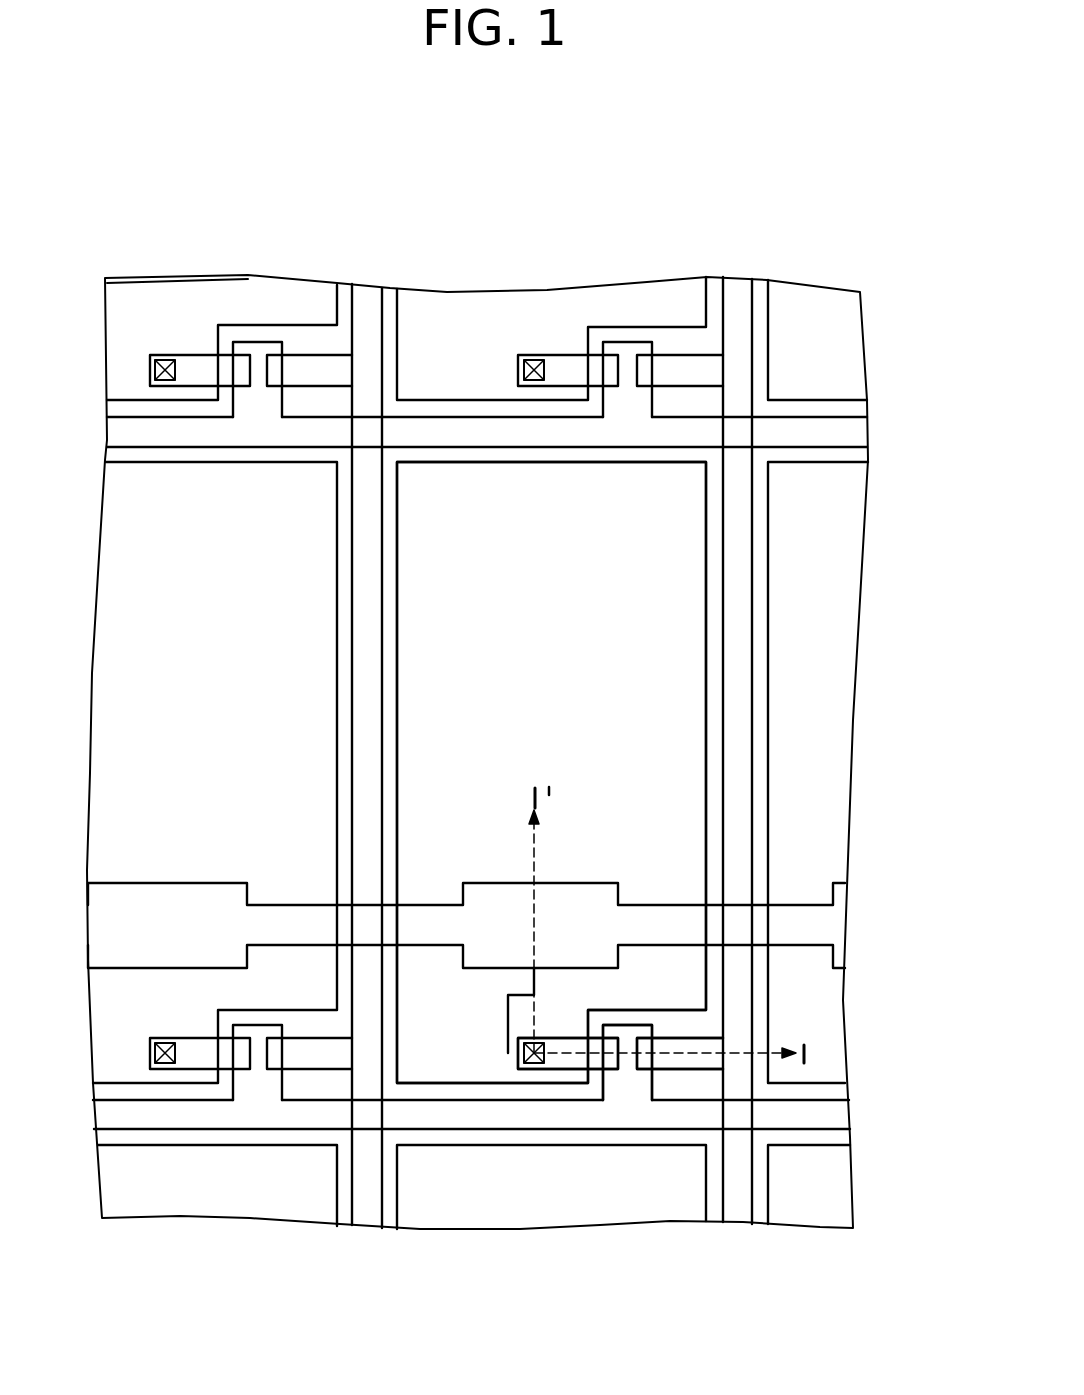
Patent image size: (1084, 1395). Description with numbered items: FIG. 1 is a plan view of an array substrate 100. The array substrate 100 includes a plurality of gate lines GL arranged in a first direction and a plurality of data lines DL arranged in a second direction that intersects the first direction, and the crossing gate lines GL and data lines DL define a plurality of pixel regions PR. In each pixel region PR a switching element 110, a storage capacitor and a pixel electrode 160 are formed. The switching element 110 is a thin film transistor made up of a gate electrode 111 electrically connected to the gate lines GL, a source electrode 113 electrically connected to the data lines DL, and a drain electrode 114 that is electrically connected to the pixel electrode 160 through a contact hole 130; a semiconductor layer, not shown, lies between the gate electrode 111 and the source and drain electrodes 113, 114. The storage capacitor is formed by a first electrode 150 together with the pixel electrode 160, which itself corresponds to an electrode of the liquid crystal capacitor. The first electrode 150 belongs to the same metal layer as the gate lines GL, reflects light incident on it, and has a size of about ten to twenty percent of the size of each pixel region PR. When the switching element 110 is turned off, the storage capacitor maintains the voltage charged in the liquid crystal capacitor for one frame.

The array substrate 100 is at (482, 217).
The switching element 110 is at (733, 1305).
The gate electrode 111 is at (628, 1083).
The source electrode 113 is at (700, 1060).
The drain electrode 114 is at (580, 1060).
The contact hole 130 is at (532, 1067).
The first electrode 150 is at (605, 913).
The pixel electrode 160 is at (665, 757).
The gate line GL is at (843, 1113).
The data line DL is at (365, 1218).
The pixel region PR is at (488, 548).